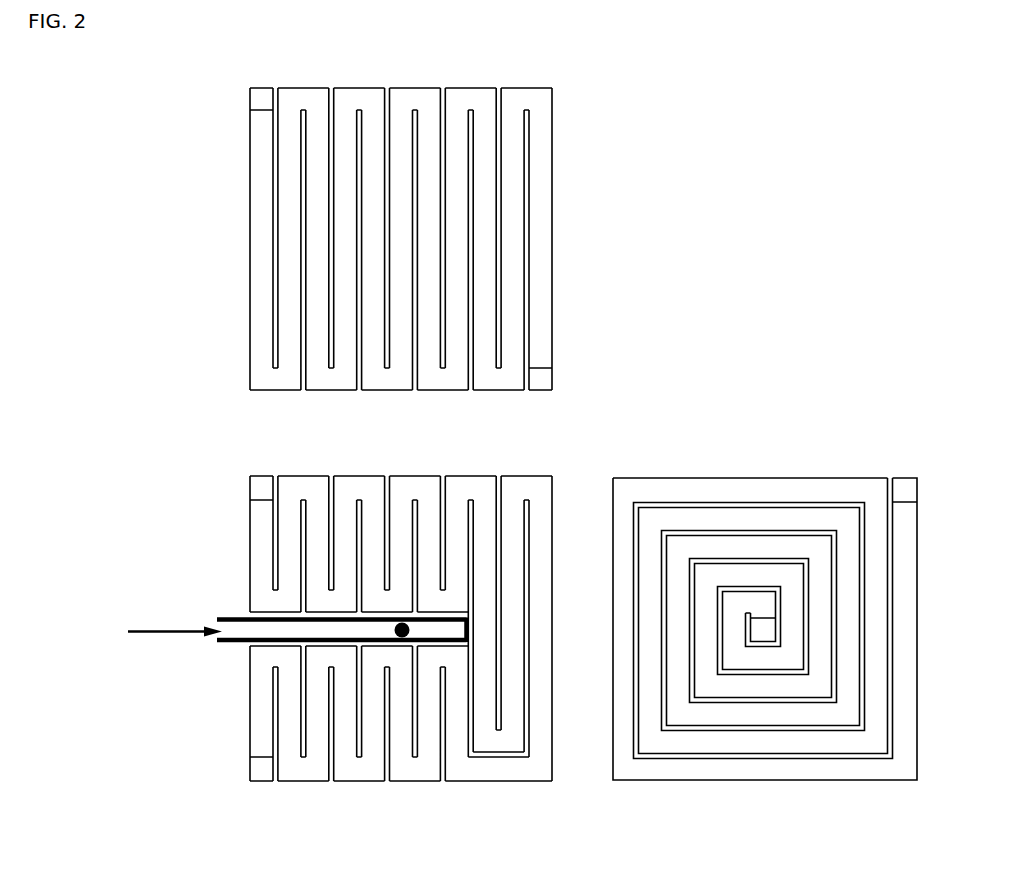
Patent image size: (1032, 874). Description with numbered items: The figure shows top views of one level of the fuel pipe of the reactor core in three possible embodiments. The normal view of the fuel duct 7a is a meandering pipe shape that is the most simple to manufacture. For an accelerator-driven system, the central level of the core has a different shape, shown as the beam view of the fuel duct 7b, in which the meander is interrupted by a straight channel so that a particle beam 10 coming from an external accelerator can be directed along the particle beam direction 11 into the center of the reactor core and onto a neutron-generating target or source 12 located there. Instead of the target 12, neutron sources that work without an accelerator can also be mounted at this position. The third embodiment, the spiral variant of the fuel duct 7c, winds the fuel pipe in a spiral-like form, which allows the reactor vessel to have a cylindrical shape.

The normal view of the fuel duct 7a is at (370, 239).
The beam view of the fuel duct 7b is at (369, 628).
The spiral variant of the fuel duct 7c is at (765, 606).
The particle beam 10 is at (175, 654).
The particle beam direction 11 is at (465, 613).
The neutron-generating target or source 12 is at (415, 613).